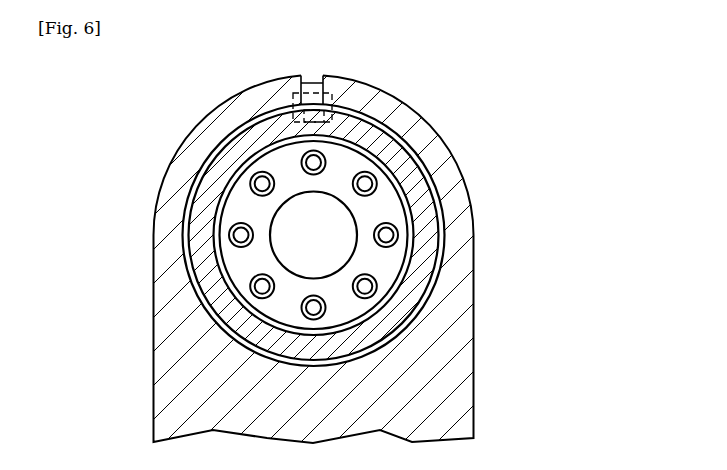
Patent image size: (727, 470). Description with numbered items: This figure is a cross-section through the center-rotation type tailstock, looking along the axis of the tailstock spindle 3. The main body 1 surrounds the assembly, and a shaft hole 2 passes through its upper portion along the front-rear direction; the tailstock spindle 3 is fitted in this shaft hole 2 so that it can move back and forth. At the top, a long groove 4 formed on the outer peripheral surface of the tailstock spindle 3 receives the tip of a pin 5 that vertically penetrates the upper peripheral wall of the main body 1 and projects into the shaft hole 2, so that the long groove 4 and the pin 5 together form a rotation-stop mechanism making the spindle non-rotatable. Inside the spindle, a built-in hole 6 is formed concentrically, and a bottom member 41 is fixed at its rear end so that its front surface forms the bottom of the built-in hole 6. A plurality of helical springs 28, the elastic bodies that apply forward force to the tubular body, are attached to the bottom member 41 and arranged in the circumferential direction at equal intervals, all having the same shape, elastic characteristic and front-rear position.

The main body 1 is at (152, 258).
The shaft hole 2 is at (410, 165).
The tailstock spindle 3 is at (220, 163).
The long groove 4 is at (293, 93).
The pin 5 is at (330, 94).
The built-in hole 6 is at (238, 268).
The helical spring 28 is at (374, 233).
The bottom member 41 is at (383, 212).